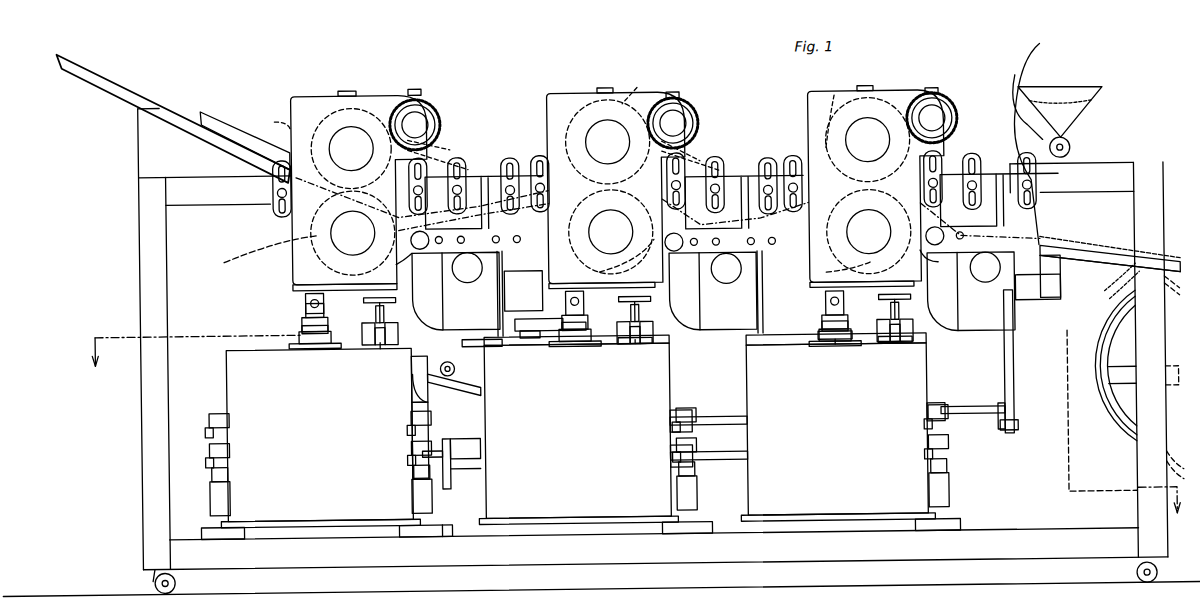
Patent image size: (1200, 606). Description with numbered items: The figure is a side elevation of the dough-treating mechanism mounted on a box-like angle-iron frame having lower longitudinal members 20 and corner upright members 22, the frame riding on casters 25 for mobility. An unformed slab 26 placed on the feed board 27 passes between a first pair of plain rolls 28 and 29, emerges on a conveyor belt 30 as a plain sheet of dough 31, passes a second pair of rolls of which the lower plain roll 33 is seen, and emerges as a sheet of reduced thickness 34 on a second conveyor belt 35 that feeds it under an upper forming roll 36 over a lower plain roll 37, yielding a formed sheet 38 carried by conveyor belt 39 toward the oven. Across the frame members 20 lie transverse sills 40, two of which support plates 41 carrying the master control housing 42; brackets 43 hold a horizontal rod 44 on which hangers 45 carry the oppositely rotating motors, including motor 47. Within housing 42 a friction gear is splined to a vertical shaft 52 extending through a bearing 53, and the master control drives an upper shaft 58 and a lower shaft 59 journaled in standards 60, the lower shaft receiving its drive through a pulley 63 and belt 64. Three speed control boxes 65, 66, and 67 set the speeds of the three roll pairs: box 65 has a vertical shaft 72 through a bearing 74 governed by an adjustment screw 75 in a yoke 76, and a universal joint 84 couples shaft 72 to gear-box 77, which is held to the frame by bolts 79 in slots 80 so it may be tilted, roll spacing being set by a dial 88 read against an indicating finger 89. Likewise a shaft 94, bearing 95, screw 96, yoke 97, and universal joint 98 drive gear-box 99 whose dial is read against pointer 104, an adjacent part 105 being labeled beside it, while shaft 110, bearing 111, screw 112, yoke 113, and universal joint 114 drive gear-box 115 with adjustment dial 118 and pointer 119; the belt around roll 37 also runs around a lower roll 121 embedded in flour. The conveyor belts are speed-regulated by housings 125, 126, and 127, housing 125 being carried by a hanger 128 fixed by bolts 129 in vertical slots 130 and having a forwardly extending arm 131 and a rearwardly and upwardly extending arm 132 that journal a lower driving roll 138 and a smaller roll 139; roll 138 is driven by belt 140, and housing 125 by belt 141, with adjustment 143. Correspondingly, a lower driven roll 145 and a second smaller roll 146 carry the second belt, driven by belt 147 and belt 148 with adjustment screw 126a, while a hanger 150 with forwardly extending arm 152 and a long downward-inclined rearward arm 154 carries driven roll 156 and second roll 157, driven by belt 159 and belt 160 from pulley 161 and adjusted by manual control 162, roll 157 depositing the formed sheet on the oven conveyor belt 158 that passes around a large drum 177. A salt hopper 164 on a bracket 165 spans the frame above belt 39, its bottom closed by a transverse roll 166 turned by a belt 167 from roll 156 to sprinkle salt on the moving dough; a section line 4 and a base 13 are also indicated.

The section line 4 is at (636, 437).
The base frame 13 is at (575, 592).
The lower longitudinal members 20 is at (1012, 540).
The upright members 22 is at (140, 287).
The casters 25 is at (148, 576).
The unformed slab 26 is at (218, 118).
The feed board 27 is at (118, 78).
The upper plain roll 28 is at (280, 102).
The lower plain roll 29 is at (262, 254).
The conveyor belt 30 is at (460, 138).
The plain sheet of dough 31 is at (454, 123).
The lower plain roll 33 is at (593, 267).
The sheet of reduced thickness 34 is at (707, 152).
The second conveyor belt 35 is at (712, 162).
The upper forming roll 36 is at (838, 99).
The lower plain roll 37 is at (848, 271).
The formed sheet 38 is at (1099, 246).
The conveyor belt 39 is at (1073, 283).
The transverse sills 40 is at (416, 536).
The plates 41 is at (444, 536).
The master control housing 42 is at (462, 342).
The brackets 43 is at (449, 378).
The horizontal rod 44 is at (427, 374).
The hangers 45 is at (438, 362).
The motor 47 is at (412, 387).
The vertical shaft 52 is at (642, 88).
The bearing 53 is at (540, 344).
The upper shaft 58 is at (712, 422).
The lower shaft 59 is at (714, 463).
The standards 60 is at (212, 506).
The pulley 63 is at (451, 481).
The belt 64 is at (456, 499).
The speed control box 65 is at (318, 500).
The speed control box 66 is at (604, 500).
The speed control box 67 is at (850, 498).
The vertical shaft 72 is at (304, 306).
The bearing 74 is at (301, 326).
The adjustment screw 75 is at (368, 337).
The yoke 76 is at (378, 339).
The gear-box 77 is at (316, 94).
The bolts 79 is at (274, 188).
The slots 80 is at (279, 210).
The universal joint 84 is at (303, 296).
The dial 88 is at (420, 88).
The indicating finger 89 is at (410, 98).
The vertical shaft 94 is at (582, 342).
The bearing 95 is at (578, 342).
The adjustment screw 96 is at (640, 338).
The yoke 97 is at (635, 362).
The universal joint 98 is at (592, 300).
The gear-box 99 is at (567, 98).
The pointer 104 is at (670, 98).
The knob 105 is at (692, 96).
The vertical shaft 110 is at (833, 334).
The bearing 111 is at (850, 344).
The adjustment screw 112 is at (896, 346).
The yoke 113 is at (895, 364).
The universal joint 114 is at (834, 348).
The gear-box 115 is at (872, 98).
The adjustment dial 118 is at (959, 70).
The pointer 119 is at (933, 96).
The lower roll 121 is at (820, 344).
The speed control housing 125 is at (520, 338).
The speed control housing 126 is at (740, 346).
The adjustment screw 126a is at (713, 291).
The speed control housing 127 is at (982, 321).
The hanger 128 is at (487, 175).
The bolts 129 is at (489, 175).
The vertical slots 130 is at (509, 175).
The forwardly extending arm 131 is at (421, 248).
The rearwardly and upwardly extending arm 132 is at (537, 244).
The lower driving roll 138 is at (392, 259).
The smaller roll 139 is at (590, 168).
The belt 140 is at (413, 266).
The belt 141 is at (510, 338).
The adjustment 143 is at (468, 282).
The lower driven roll 145 is at (650, 216).
The second smaller roll 146 is at (852, 171).
The belt 147 is at (626, 255).
The belt 148 is at (746, 347).
The hanger 150 is at (999, 179).
The forwardly extending arm 152 is at (931, 254).
The rearward arm 154 is at (1091, 244).
The driven roll 156 is at (912, 215).
The second roll 157 is at (1119, 300).
The oven conveyor belt 158 is at (1113, 318).
The belt 159 is at (939, 273).
The belt 160 is at (1013, 363).
The pulley 161 is at (1013, 419).
The manual control 162 is at (986, 287).
The salt hopper 164 is at (1054, 97).
The bracket 165 is at (1016, 93).
The transverse roll 166 is at (1073, 152).
The belt 167 is at (1059, 188).
The drum 177 is at (1114, 445).